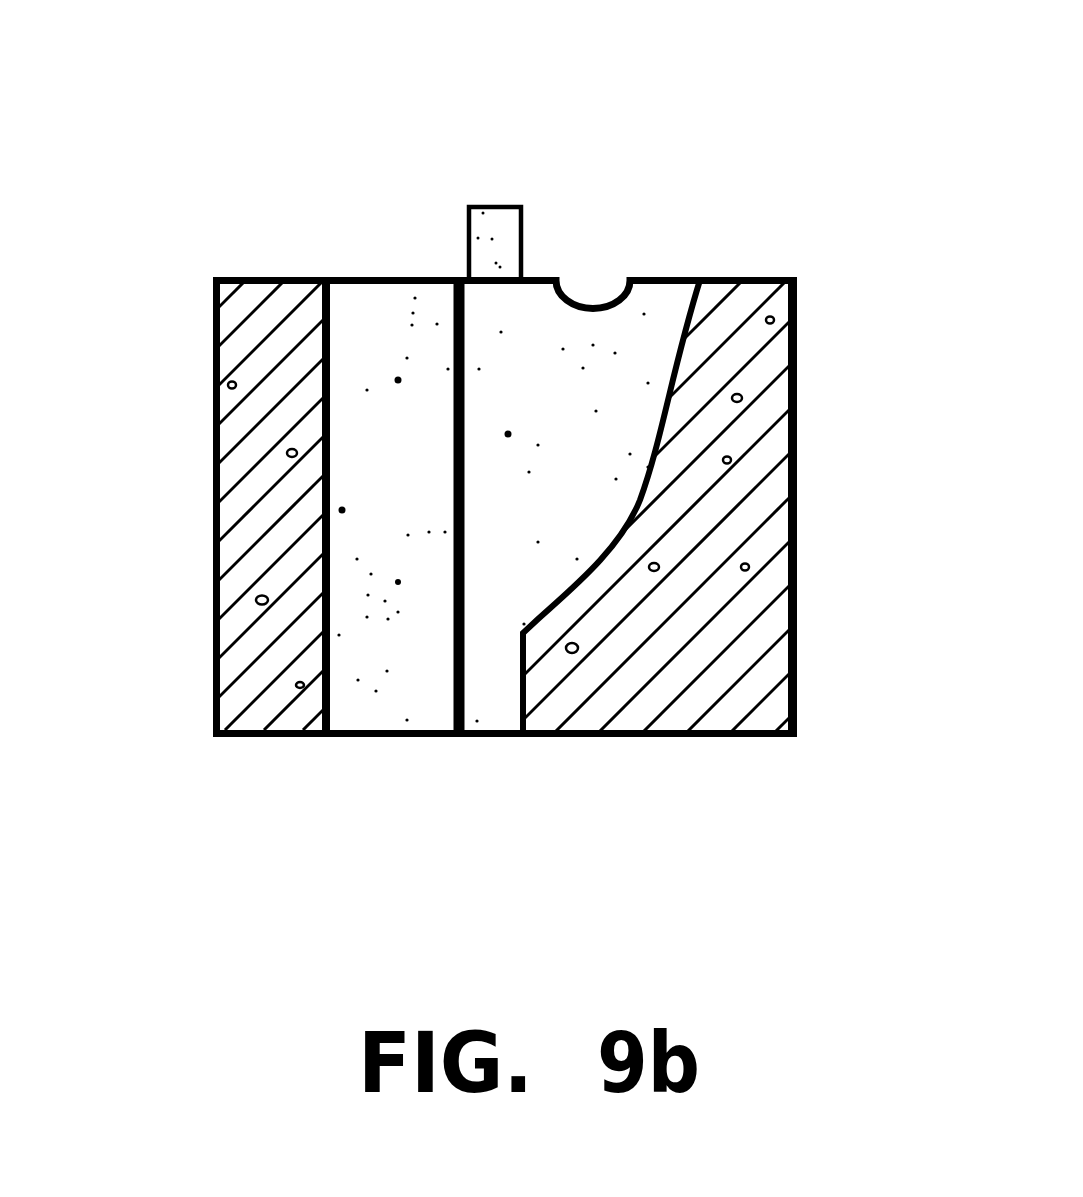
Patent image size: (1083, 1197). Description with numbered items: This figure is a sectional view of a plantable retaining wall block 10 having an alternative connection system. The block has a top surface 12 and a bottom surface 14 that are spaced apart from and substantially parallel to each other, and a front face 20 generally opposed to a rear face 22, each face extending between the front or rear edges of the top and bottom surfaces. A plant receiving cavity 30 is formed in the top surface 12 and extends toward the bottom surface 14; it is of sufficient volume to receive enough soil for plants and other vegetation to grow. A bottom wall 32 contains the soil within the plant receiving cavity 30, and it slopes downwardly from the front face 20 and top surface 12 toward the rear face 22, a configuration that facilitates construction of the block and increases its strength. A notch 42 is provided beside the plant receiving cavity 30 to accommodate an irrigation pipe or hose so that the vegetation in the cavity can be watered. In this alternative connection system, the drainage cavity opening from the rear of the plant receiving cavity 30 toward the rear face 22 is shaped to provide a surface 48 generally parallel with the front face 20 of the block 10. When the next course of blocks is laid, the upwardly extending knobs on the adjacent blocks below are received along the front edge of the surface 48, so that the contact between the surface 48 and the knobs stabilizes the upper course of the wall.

The wall block 10 is at (725, 132).
The top surface 12 is at (290, 337).
The bottom surface 14 is at (603, 735).
The front face 20 is at (798, 445).
The rear face 22 is at (223, 437).
The plant receiving cavity 30 is at (573, 380).
The bottom wall 32 is at (698, 660).
The notch 42 is at (578, 302).
The surface 48 is at (520, 683).